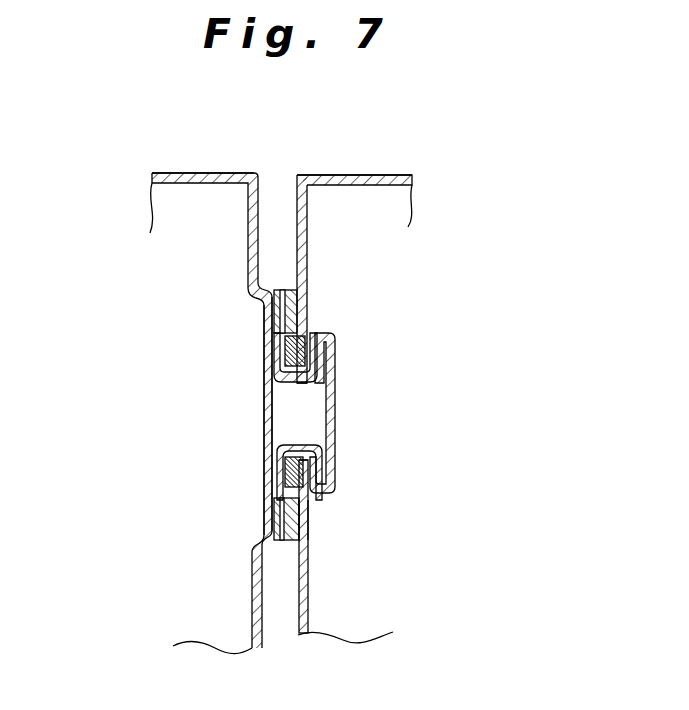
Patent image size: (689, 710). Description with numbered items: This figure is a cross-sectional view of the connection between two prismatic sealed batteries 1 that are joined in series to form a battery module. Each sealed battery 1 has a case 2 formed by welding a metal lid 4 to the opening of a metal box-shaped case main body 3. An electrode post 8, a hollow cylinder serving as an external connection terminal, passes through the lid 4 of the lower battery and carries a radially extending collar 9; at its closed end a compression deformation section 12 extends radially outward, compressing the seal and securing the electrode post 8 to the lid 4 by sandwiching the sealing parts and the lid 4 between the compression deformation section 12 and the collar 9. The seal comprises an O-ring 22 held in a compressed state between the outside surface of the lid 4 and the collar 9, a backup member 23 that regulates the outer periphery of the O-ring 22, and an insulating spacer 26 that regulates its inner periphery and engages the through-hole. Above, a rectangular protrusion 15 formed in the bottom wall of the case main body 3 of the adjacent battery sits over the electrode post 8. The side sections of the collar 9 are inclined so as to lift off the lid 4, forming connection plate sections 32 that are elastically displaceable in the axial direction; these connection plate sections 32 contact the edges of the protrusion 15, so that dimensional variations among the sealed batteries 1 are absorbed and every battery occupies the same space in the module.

The prismatic sealed battery 1 is at (153, 256).
The case 2 is at (161, 172).
The case main body 3 is at (190, 177).
The lid 4 is at (291, 200).
The electrode post 8 is at (298, 417).
The collar 9 is at (273, 358).
The compression deformation section 12 is at (327, 395).
The protrusion 15 is at (267, 408).
The O-ring 22 is at (302, 498).
The backup member 23 is at (305, 533).
The insulating spacer 26 is at (310, 503).
The connection plate section 32 is at (273, 308).